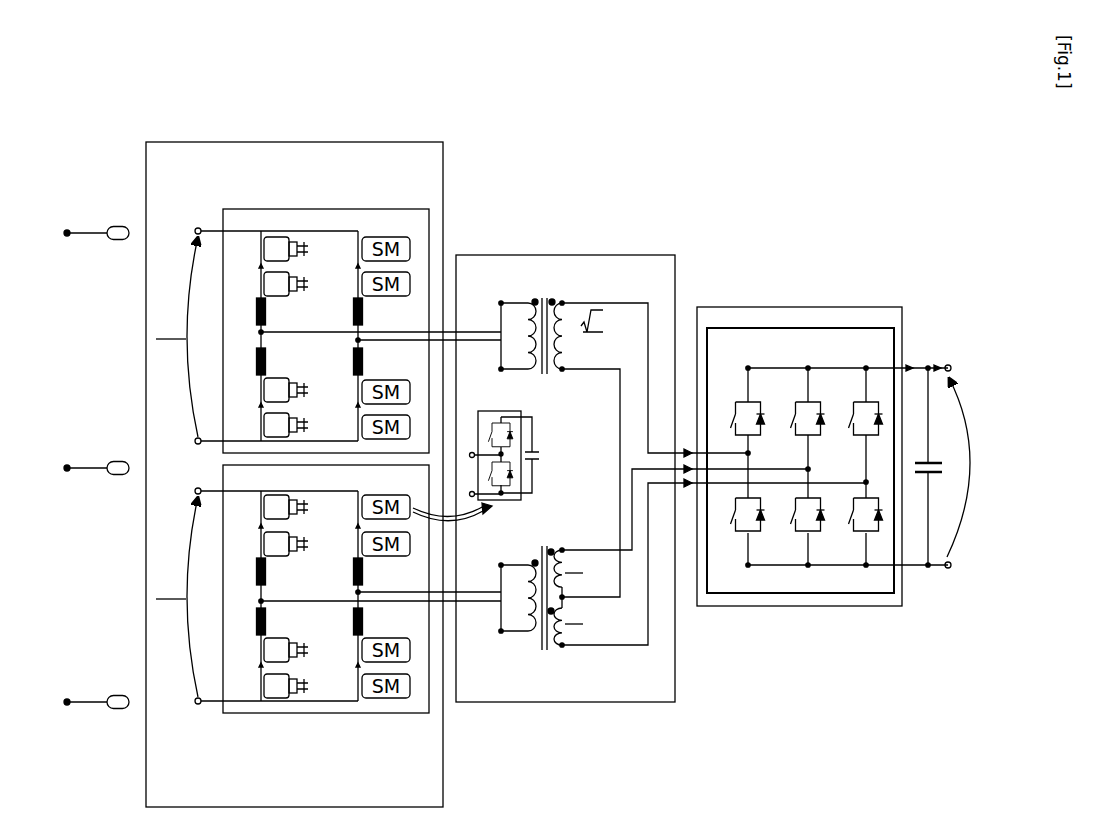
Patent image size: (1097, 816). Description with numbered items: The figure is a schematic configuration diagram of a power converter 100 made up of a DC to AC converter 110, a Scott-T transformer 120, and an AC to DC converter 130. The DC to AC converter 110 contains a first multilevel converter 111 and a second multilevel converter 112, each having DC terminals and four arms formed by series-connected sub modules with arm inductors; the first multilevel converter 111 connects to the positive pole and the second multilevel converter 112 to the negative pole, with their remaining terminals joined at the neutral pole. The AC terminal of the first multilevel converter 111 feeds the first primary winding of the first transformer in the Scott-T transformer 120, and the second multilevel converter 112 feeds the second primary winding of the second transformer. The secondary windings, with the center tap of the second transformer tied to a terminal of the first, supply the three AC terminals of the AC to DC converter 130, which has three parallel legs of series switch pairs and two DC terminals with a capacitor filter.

The power converter 100 is at (620, 73).
The DC to AC converter 110 is at (295, 142).
The first multilevel converter 111 is at (330, 209).
The second multilevel converter 112 is at (325, 714).
The Scott-T transformer 120 is at (566, 255).
The AC to DC converter 130 is at (801, 306).